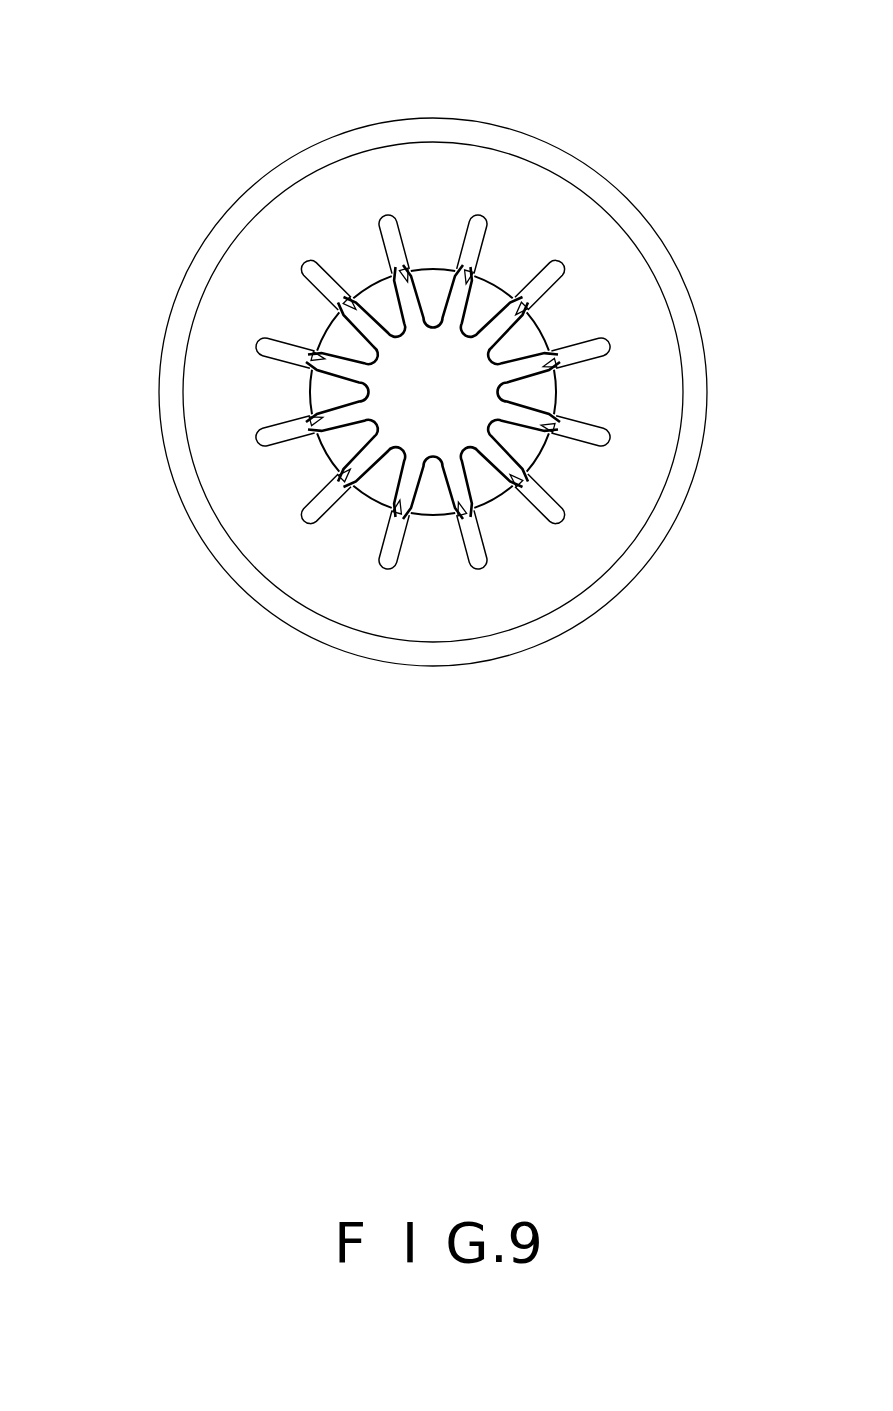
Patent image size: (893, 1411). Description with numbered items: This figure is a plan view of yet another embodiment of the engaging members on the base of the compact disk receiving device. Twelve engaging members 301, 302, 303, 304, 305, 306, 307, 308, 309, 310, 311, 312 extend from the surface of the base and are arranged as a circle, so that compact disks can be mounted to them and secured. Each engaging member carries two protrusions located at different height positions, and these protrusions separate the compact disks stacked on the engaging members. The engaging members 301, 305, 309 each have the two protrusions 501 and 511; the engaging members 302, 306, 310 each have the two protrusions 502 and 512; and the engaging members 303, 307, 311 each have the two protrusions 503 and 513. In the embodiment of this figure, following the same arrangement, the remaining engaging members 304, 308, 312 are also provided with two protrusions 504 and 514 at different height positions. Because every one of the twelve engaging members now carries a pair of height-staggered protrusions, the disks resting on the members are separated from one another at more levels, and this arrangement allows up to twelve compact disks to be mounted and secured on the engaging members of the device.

The engaging member 301 is at (333, 337).
The engaging member 302 is at (380, 296).
The engaging member 303 is at (433, 282).
The engaging member 304 is at (482, 293).
The engaging member 305 is at (533, 338).
The engaging member 306 is at (547, 393).
The engaging member 307 is at (527, 448).
The engaging member 308 is at (488, 490).
The engaging member 309 is at (430, 507).
The engaging member 310 is at (378, 481).
The engaging member 311 is at (333, 448).
The engaging member 312 is at (325, 396).
The protrusion 501 is at (305, 262).
The protrusion 502 is at (400, 268).
The protrusion 503 is at (457, 270).
The protrusion 504 is at (525, 296).
The protrusion 511 is at (318, 354).
The protrusion 512 is at (350, 285).
The protrusion 513 is at (416, 268).
The protrusion 514 is at (478, 276).